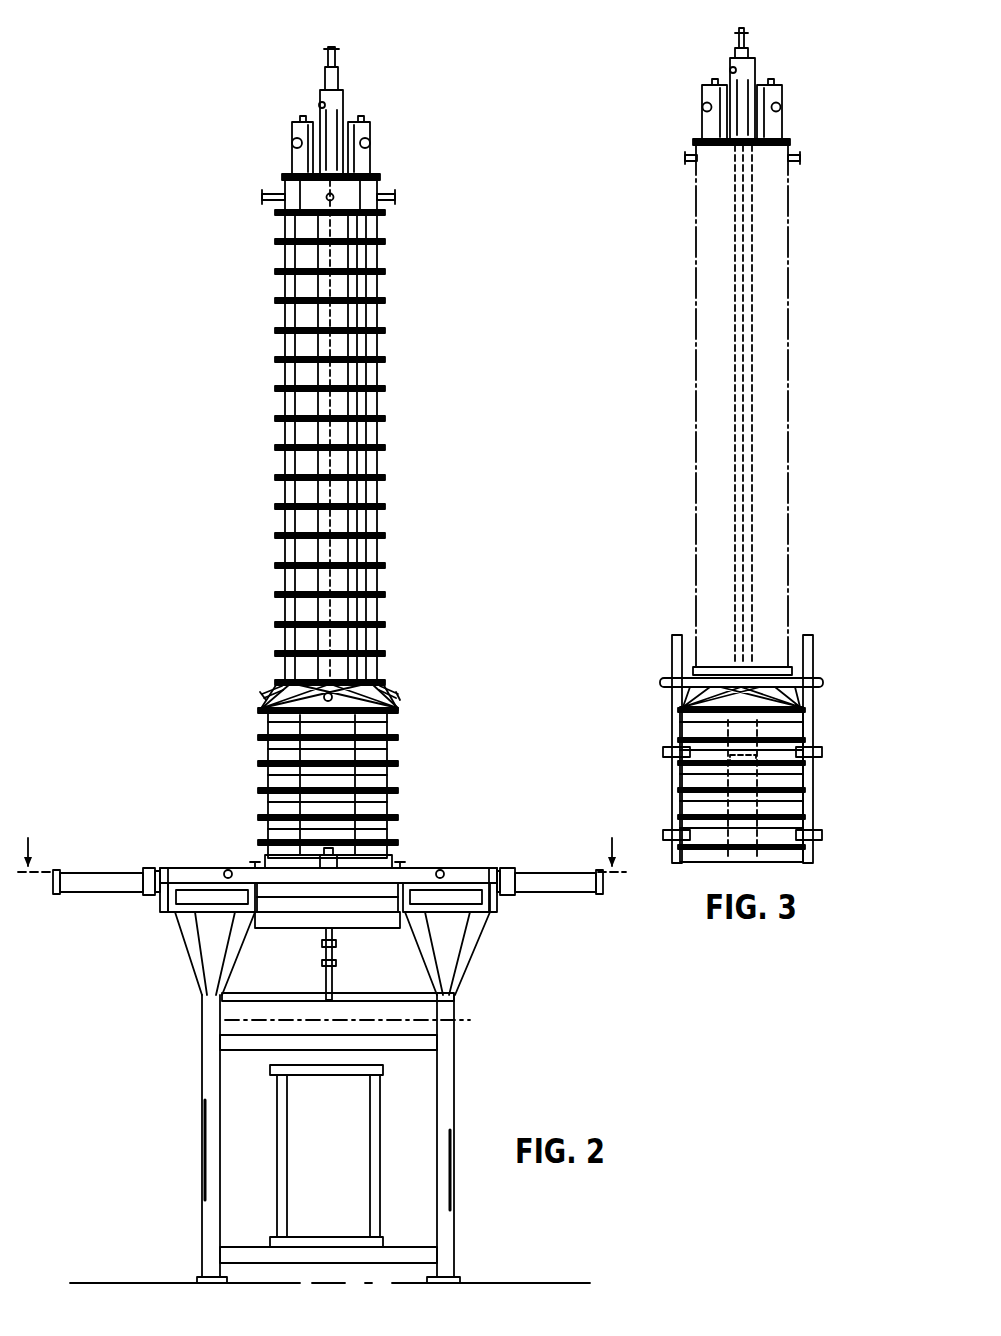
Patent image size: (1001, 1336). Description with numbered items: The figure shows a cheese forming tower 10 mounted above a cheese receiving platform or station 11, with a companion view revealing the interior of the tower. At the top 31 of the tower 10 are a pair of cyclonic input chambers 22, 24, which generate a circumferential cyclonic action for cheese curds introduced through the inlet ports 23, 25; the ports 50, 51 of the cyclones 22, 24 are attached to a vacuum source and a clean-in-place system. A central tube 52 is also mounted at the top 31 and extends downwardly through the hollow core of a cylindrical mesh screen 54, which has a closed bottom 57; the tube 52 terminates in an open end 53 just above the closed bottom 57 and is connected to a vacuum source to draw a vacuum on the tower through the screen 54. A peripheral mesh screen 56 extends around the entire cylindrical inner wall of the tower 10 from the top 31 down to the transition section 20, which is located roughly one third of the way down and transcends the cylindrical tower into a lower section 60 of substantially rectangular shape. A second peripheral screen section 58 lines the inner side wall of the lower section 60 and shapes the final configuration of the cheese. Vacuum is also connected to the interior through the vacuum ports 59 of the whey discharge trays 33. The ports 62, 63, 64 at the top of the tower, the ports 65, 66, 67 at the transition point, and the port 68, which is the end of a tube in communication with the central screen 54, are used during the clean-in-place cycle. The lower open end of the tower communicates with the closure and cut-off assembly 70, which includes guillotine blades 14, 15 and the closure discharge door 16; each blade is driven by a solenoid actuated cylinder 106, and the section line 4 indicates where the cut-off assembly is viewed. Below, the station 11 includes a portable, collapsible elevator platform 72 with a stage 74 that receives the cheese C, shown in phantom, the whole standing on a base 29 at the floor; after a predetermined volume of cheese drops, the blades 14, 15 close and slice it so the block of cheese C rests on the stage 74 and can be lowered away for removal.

In FIG. 2, the tower 10 is at (388, 367).
In FIG. 3, the tower 10 is at (680, 420).
In FIG. 2, the cheese receiving platform or station 11 is at (405, 1090).
In FIG. 2, the guillotine blade 14 is at (280, 885).
In FIG. 2, the guillotine blade 15 is at (380, 880).
In FIG. 2, the closure discharge door 16 is at (368, 897).
In FIG. 2, the transition section 20 is at (402, 699).
In FIG. 3, the transition section 20 is at (660, 703).
In FIG. 2, the cyclonic input chamber 22 is at (293, 160).
In FIG. 3, the cyclonic input chamber 22 is at (702, 125).
In FIG. 2, the inlet port 23 is at (291, 143).
In FIG. 3, the inlet port 23 is at (702, 102).
In FIG. 2, the cyclonic input chamber 24 is at (372, 159).
In FIG. 3, the cyclonic input chamber 24 is at (783, 123).
In FIG. 2, the inlet port 25 is at (371, 143).
In FIG. 3, the inlet port 25 is at (782, 105).
In FIG. 2, the base 29 is at (415, 1250).
In FIG. 2, the top 31 is at (378, 193).
In FIG. 2, the whey discharge tray 33 is at (170, 905).
In FIG. 2, the port 50 is at (303, 120).
In FIG. 2, the port 51 is at (366, 118).
In FIG. 2, the central tube 52 is at (332, 60).
In FIG. 3, the central tube 52 is at (746, 33).
In FIG. 3, the open end 53 is at (740, 670).
In FIG. 2, the cylindrical mesh screen 54 is at (350, 283).
In FIG. 3, the cylindrical mesh screen 54 is at (752, 222).
In FIG. 3, the peripheral mesh screen 56 is at (784, 470).
In FIG. 3, the closed bottom 57 is at (752, 675).
In FIG. 2, the second peripheral screen section 58 is at (380, 780).
In FIG. 3, the second peripheral screen section 58 is at (795, 786).
In FIG. 2, the vacuum port 59 is at (228, 868).
In FIG. 2, the lower section 60 is at (388, 756).
In FIG. 3, the lower section 60 is at (672, 778).
In FIG. 2, the port 62 is at (397, 200).
In FIG. 3, the port 62 is at (801, 158).
In FIG. 2, the port 63 is at (275, 203).
In FIG. 3, the port 63 is at (683, 158).
In FIG. 2, the port 64 is at (336, 200).
In FIG. 2, the port 65 is at (395, 690).
In FIG. 3, the port 65 is at (815, 688).
In FIG. 2, the port 66 is at (333, 695).
In FIG. 2, the port 67 is at (268, 690).
In FIG. 3, the port 67 is at (672, 690).
In FIG. 2, the port 68 is at (343, 78).
In FIG. 3, the port 68 is at (752, 50).
In FIG. 2, the closure and cut-off assembly 70 is at (162, 968).
In FIG. 2, the portable, collapsible platform 72 is at (380, 1125).
In FIG. 2, the stage 74 is at (332, 1078).
In FIG. 2, the solenoid actuated cylinder 106 is at (90, 872).
In FIG. 2, the section line 4 is at (322, 871).
In FIG. 2, the cheese C is at (462, 1018).